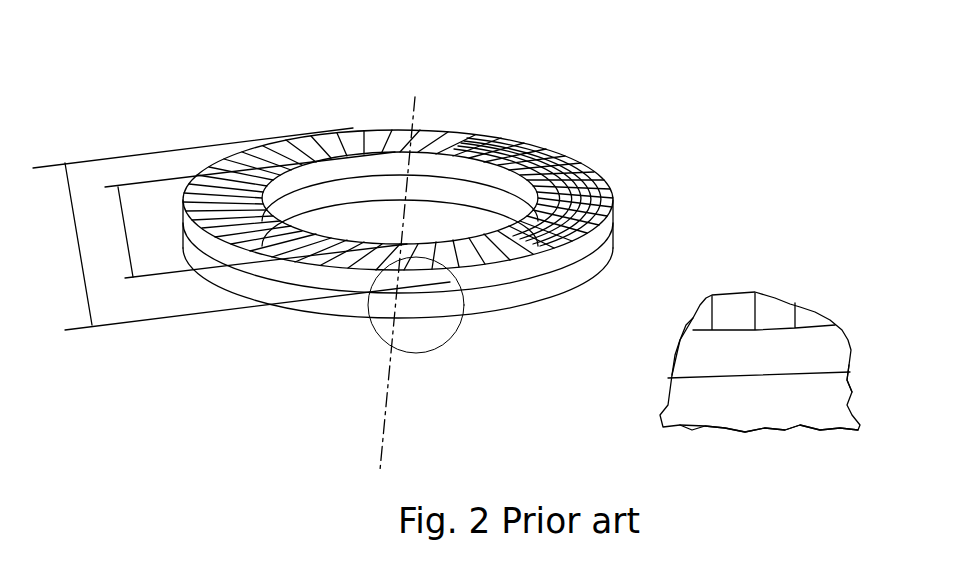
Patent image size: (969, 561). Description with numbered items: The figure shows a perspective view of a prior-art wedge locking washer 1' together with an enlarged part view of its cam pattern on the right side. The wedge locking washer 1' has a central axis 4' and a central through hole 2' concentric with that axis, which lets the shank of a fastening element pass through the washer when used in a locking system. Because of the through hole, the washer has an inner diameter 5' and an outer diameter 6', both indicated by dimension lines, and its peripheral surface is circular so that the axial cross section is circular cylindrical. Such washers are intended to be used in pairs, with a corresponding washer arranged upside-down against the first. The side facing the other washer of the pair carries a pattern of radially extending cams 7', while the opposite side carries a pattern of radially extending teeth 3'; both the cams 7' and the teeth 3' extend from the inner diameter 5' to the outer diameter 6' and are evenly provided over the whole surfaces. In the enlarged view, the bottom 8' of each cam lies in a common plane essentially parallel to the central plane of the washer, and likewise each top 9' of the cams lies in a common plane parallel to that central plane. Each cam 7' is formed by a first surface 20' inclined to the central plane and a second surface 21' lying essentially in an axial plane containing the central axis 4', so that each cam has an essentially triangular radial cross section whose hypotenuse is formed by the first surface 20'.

The wedge locking washer 1' is at (521, 239).
The central through hole 2' is at (436, 132).
The teeth 3' is at (644, 210).
The central axis 4' is at (413, 257).
The inner diameter 5' is at (249, 215).
The outer diameter 6' is at (241, 229).
The cams 7' is at (480, 284).
The bottom of the cam 8' is at (751, 436).
The top of the cam 9' is at (671, 385).
The first surface 20' is at (769, 447).
The second surface 21' is at (833, 359).